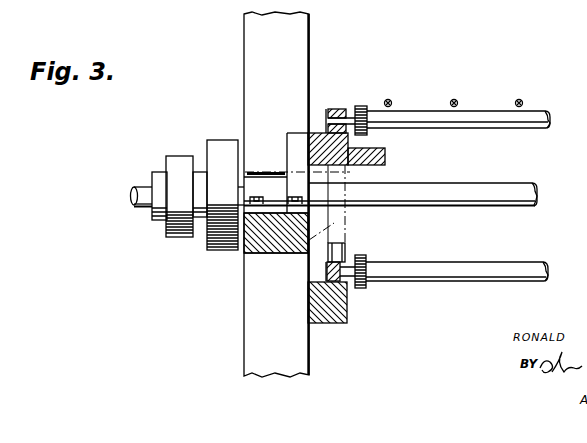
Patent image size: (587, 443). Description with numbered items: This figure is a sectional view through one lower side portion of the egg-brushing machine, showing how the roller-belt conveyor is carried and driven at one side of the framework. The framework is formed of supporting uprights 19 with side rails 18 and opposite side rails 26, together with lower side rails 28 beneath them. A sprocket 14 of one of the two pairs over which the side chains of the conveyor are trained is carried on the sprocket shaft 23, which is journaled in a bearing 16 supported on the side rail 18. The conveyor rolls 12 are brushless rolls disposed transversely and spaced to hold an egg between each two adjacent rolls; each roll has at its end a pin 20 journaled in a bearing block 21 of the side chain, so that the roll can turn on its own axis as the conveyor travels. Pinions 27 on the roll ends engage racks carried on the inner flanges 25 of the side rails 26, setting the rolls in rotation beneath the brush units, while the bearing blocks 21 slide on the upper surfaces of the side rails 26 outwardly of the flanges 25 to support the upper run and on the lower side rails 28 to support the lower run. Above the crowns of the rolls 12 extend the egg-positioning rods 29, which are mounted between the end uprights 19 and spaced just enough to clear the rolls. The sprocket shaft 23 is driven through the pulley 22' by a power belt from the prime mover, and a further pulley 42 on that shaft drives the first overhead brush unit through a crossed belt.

The brushless rolls 12 is at (501, 123).
The sprockets 14 is at (296, 254).
The bearings 16 is at (275, 171).
The side rails 18 is at (264, 242).
The uprights 19 is at (297, 39).
The pins 20 is at (325, 114).
The bearing blocks 21 is at (337, 110).
The pulley 22' is at (199, 203).
The sprocket shaft 23 is at (448, 202).
The inner flanges 25 is at (387, 155).
The side rails 26 is at (313, 143).
The pinions 27 is at (363, 106).
The lower side rails 28 is at (310, 302).
The rods 29 is at (452, 101).
The pulley 42 is at (168, 228).